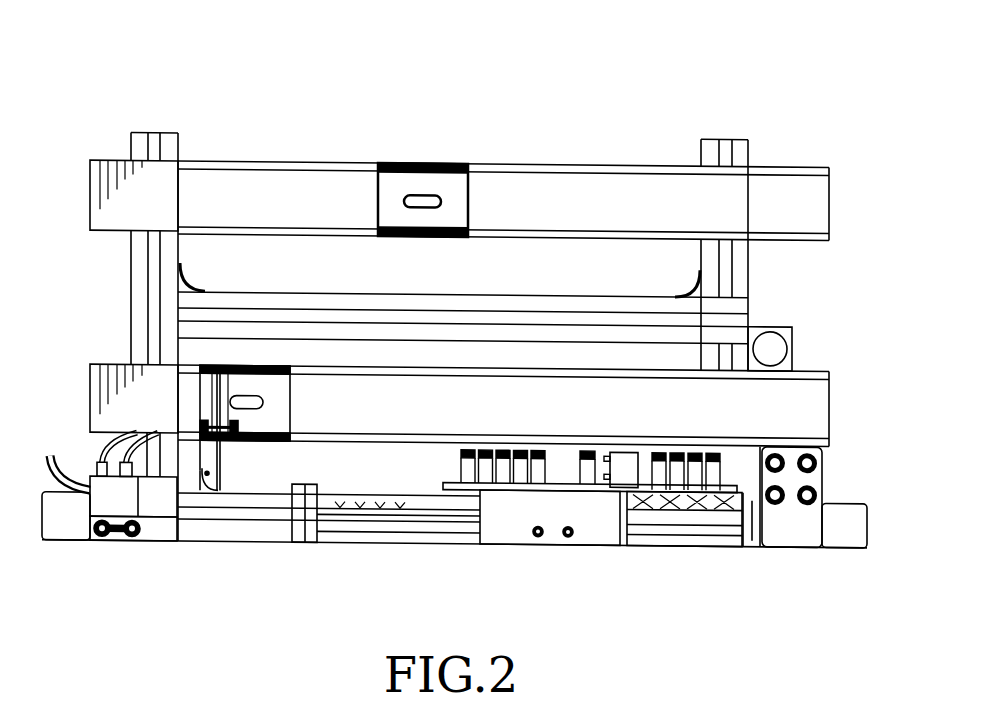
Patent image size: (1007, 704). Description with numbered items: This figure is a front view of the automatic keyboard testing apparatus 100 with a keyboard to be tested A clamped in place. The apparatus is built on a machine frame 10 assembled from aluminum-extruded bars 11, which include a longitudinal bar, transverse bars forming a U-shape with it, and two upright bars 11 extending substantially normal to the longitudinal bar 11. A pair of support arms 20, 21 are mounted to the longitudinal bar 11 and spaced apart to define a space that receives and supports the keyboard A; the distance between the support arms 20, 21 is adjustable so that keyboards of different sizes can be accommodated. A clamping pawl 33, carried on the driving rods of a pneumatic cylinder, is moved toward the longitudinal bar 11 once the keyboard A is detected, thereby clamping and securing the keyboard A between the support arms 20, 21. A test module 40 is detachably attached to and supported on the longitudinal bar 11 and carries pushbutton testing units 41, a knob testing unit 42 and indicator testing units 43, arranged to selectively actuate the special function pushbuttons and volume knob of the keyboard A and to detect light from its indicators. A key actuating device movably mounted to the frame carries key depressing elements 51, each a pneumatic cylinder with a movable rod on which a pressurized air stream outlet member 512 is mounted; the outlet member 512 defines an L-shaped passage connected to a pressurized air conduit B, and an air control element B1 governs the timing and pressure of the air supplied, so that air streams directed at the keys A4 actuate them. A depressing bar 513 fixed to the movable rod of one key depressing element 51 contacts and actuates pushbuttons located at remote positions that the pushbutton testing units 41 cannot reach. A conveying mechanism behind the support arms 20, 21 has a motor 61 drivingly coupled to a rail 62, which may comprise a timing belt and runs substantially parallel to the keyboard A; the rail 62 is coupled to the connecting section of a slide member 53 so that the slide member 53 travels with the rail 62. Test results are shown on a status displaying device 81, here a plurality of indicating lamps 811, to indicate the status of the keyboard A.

The automatic keyboard testing apparatus 100 is at (516, 142).
The machine frame 10 is at (154, 118).
The aluminum-extruded bars 11 is at (720, 308).
The support arm 20 is at (297, 477).
The support arm 21 is at (752, 522).
The clamping pawl 33 is at (598, 515).
The test module 40 is at (455, 488).
The pushbutton testing units 41 is at (484, 468).
The knob testing unit 42 is at (563, 478).
The indicator testing units 43 is at (630, 463).
The key depressing element 51 is at (198, 363).
The pressurized air stream outlet member 512 is at (215, 477).
The depressing bar 513 is at (227, 483).
The slide member 53 is at (260, 388).
The motor 61 is at (105, 382).
The rail 62 is at (813, 400).
The status displaying device 81 is at (800, 540).
The indicating lamps 811 is at (816, 462).
The keyboard to be tested A is at (400, 522).
The keys A4 is at (350, 500).
The pressurized air conduit B is at (203, 480).
The air control element B1 is at (110, 507).